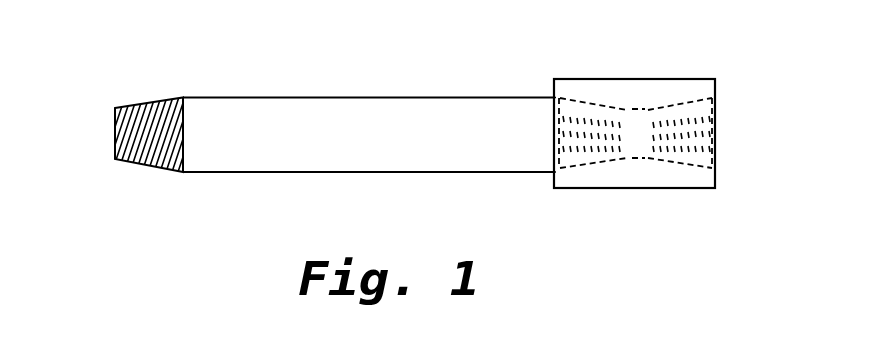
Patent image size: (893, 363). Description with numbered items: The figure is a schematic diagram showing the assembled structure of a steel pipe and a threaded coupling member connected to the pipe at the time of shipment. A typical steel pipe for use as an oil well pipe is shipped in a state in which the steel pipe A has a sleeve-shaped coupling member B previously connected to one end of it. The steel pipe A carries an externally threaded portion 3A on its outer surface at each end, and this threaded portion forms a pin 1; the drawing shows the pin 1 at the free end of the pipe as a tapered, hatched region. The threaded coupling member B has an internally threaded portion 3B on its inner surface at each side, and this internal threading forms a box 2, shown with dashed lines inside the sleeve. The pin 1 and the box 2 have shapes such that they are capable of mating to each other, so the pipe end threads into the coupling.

The pin 1 is at (147, 102).
The box 2 is at (648, 92).
The externally threaded portion 3A is at (122, 130).
The internally threaded portion 3B is at (677, 137).
The steel pipe A is at (268, 97).
The threaded coupling member B is at (603, 79).